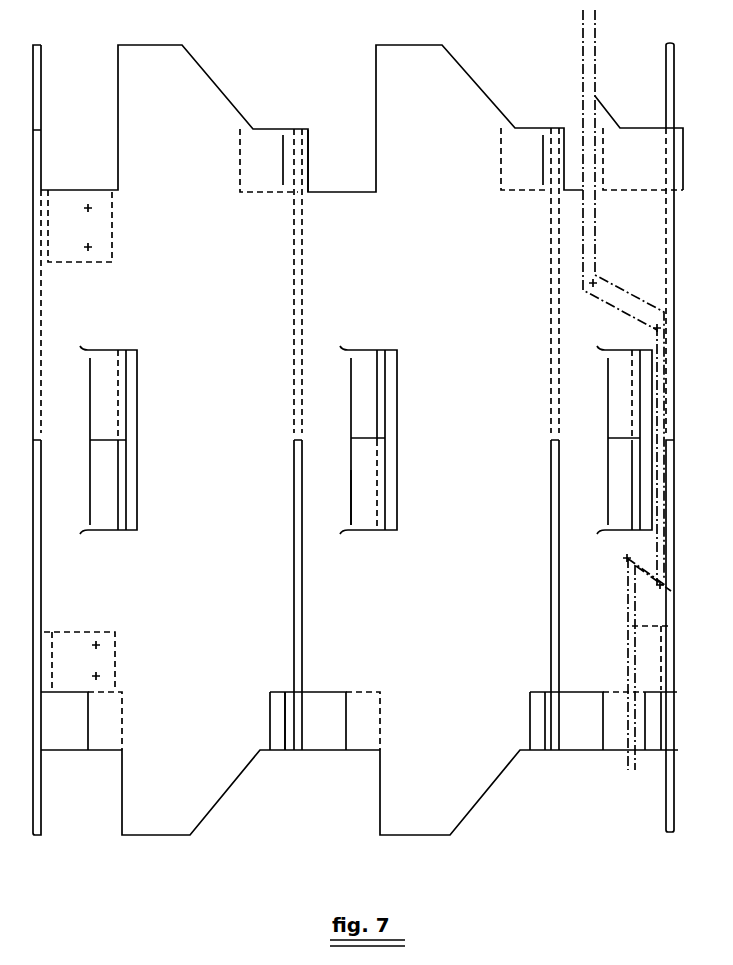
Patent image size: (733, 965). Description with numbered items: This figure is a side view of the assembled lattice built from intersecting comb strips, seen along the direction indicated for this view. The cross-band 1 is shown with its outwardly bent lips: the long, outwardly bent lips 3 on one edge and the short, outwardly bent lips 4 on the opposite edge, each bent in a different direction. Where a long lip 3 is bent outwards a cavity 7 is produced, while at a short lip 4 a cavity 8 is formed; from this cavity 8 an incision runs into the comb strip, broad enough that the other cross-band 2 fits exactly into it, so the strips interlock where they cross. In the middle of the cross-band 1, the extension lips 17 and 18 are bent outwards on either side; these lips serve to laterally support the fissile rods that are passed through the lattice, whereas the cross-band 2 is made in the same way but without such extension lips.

The cross-band 1 is at (357, 267).
The cross-band 2 is at (302, 645).
The long outwardly bent lip 3 is at (310, 152).
The short outwardly bent lip 4 is at (285, 734).
The cavity 7 is at (350, 170).
The cavity 8 is at (330, 733).
The extension lip 17 is at (364, 356).
The extension lip 18 is at (368, 512).